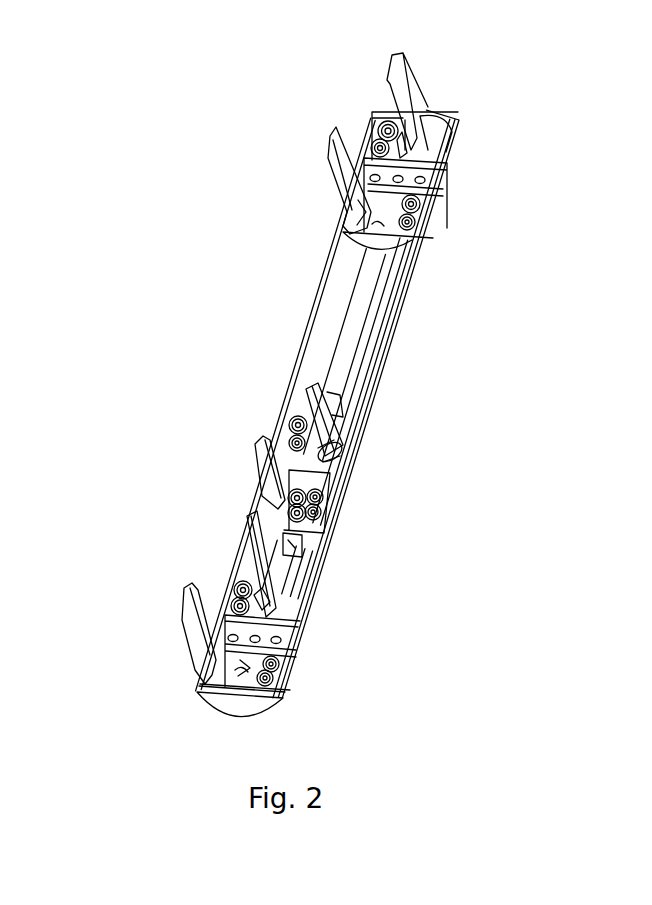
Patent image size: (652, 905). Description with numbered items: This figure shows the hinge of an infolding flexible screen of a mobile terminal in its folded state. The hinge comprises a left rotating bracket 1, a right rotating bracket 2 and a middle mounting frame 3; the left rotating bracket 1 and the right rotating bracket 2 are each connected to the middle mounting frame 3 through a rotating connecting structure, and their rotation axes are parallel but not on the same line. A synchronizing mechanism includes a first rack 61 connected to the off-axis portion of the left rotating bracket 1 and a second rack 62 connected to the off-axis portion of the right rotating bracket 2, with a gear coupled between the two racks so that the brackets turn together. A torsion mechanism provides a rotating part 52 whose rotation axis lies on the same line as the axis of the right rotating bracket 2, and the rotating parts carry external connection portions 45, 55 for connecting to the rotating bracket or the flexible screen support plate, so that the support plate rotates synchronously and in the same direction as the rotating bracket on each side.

The left rotating bracket 1 is at (350, 200).
The right rotating bracket 2 is at (455, 108).
The middle mounting frame 3 is at (310, 335).
The external connection portion 45 is at (255, 455).
The rotating part 52 is at (340, 452).
The external connection portion 55 is at (320, 407).
The first rack 61 is at (440, 183).
The second rack 62 is at (390, 158).